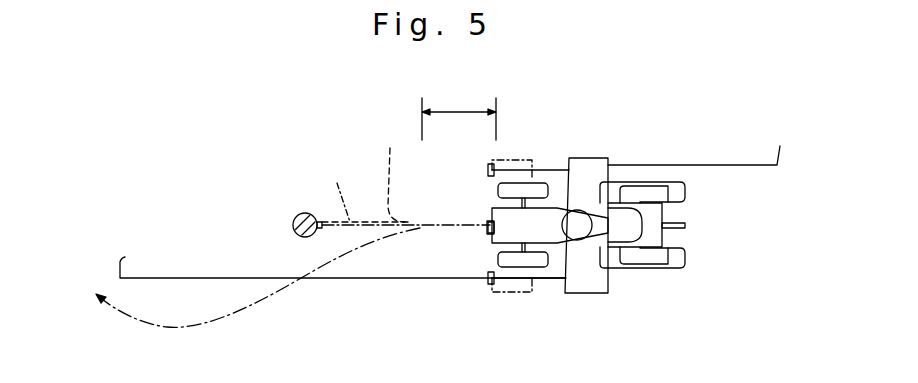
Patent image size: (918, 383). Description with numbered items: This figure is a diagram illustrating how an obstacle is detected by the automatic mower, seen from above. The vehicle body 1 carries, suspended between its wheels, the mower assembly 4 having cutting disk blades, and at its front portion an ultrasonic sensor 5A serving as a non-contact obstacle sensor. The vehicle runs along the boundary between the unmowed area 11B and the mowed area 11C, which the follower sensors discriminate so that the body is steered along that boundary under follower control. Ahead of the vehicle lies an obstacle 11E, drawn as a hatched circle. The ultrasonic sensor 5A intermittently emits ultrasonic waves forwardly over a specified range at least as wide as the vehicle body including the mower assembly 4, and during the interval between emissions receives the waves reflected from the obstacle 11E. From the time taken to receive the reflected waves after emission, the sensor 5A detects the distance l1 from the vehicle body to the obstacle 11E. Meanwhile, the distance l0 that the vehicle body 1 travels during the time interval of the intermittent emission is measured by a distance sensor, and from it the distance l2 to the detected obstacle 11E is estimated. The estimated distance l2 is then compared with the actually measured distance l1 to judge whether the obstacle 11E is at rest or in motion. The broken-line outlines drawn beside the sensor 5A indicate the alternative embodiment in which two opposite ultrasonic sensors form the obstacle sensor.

The vehicle body 1 is at (553, 202).
The mower assembly 4 is at (587, 158).
The ultrasonic sensor 5A is at (490, 237).
The obstacle 11E is at (300, 213).
The unmowed area 11B is at (220, 178).
The mowed area 11C is at (258, 296).
The distance traveled during emission interval l0 is at (459, 118).
The measured distance to obstacle l1 is at (341, 192).
The estimated distance to obstacle l2 is at (392, 175).